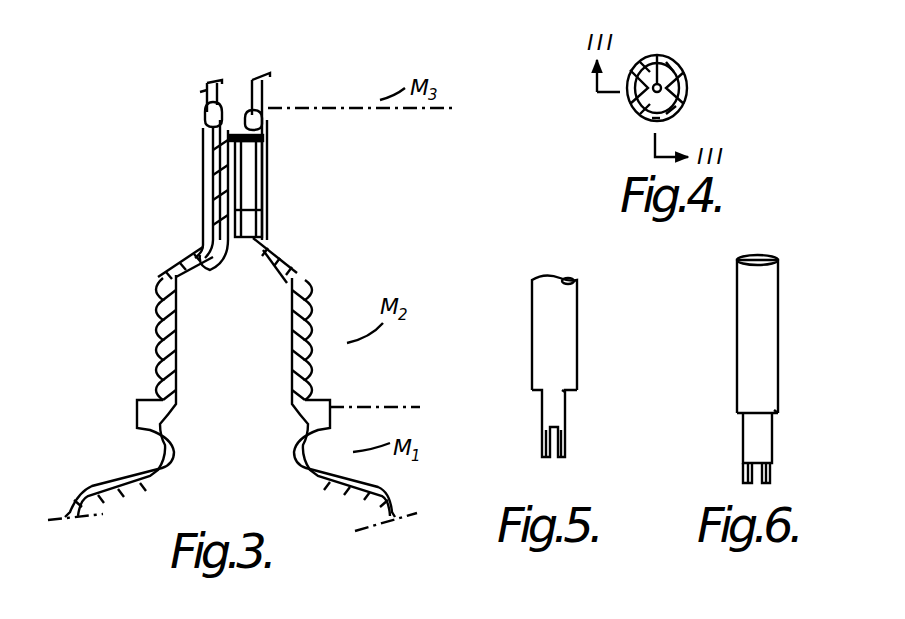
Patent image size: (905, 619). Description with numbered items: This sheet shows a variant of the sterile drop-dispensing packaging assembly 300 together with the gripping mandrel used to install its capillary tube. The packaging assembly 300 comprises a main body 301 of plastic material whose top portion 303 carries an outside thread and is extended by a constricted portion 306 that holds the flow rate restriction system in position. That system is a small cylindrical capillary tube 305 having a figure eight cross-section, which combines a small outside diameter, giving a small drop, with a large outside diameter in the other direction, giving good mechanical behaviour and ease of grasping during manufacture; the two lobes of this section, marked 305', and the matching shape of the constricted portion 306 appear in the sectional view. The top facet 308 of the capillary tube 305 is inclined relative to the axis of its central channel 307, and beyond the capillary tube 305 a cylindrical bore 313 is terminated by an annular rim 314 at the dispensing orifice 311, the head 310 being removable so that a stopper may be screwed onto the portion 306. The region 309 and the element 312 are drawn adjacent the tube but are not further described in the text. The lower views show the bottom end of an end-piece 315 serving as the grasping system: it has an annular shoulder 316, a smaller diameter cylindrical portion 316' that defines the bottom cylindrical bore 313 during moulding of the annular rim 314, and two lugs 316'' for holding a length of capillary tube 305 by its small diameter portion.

In FIG. 3, the packaging assembly 300 is at (140, 320).
In FIG. 3, the main body 301 is at (103, 466).
In FIG. 3, the top portion 303 is at (162, 272).
In FIG. 3, the capillary tube 305 is at (285, 189).
In FIG. 4, the capillary tube 305 is at (677, 63).
In FIG. 4, the slot in sleeve 305' is at (659, 96).
In FIG. 3, the constricted portion 306 is at (220, 193).
In FIG. 4, the constricted portion 306 is at (687, 68).
In FIG. 3, the central channel 307 is at (262, 208).
In FIG. 4, the central channel 307 is at (653, 58).
In FIG. 3, the top facet 308 is at (260, 138).
In FIG. 3, the inner skin 309 is at (200, 247).
In FIG. 3, the head 310 is at (270, 76).
In FIG. 3, the dispensing orifice 311 is at (268, 84).
In FIG. 3, the arm bulb 312 is at (253, 122).
In FIG. 3, the cylindrical bore 313 is at (207, 150).
In FIG. 3, the annular rim 314 is at (200, 92).
In FIG. 4, the end-piece 315 is at (647, 127).
In FIG. 5, the end-piece 315 is at (578, 345).
In FIG. 6, the end-piece 315 is at (781, 350).
In FIG. 5, the annular shoulder 316 is at (562, 449).
In FIG. 6, the annular shoulder 316 is at (759, 454).
In FIG. 5, the pin shoulder 316' is at (599, 379).
In FIG. 6, the pin shoulder 316' is at (803, 387).
In FIG. 5, the pin shank 316'' is at (532, 423).
In FIG. 6, the pin shank 316'' is at (727, 427).